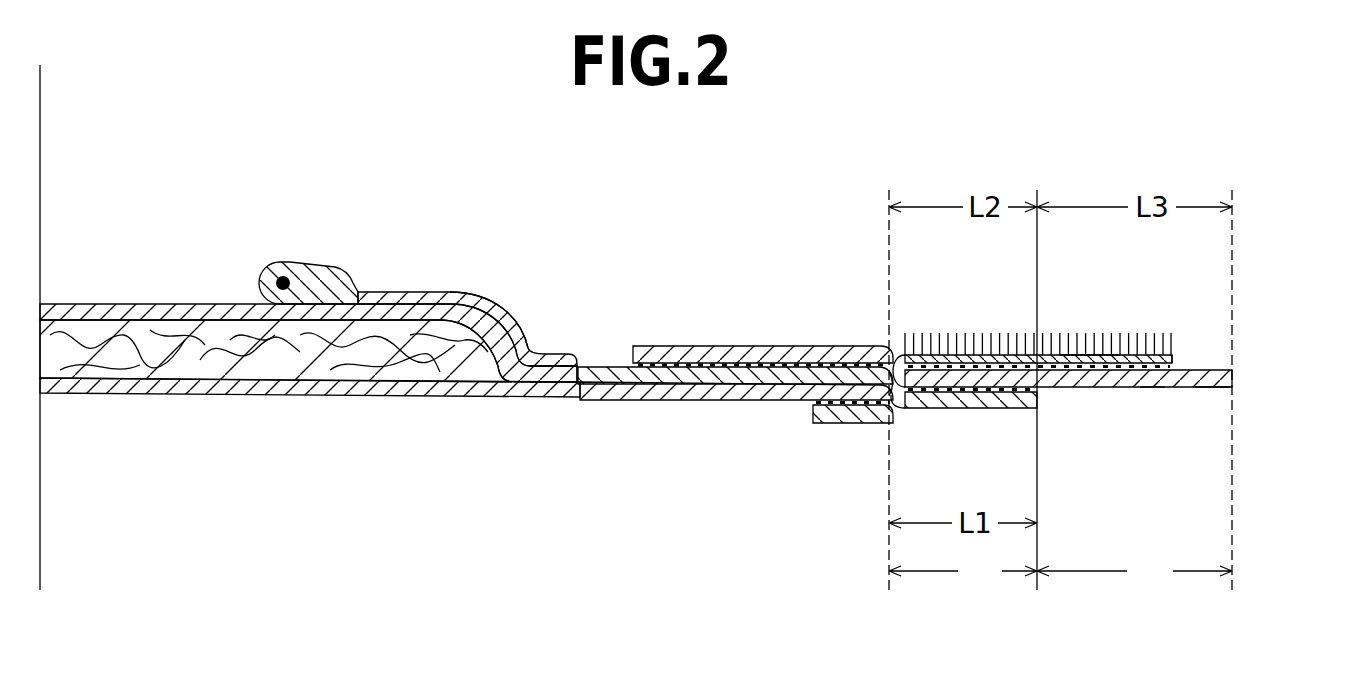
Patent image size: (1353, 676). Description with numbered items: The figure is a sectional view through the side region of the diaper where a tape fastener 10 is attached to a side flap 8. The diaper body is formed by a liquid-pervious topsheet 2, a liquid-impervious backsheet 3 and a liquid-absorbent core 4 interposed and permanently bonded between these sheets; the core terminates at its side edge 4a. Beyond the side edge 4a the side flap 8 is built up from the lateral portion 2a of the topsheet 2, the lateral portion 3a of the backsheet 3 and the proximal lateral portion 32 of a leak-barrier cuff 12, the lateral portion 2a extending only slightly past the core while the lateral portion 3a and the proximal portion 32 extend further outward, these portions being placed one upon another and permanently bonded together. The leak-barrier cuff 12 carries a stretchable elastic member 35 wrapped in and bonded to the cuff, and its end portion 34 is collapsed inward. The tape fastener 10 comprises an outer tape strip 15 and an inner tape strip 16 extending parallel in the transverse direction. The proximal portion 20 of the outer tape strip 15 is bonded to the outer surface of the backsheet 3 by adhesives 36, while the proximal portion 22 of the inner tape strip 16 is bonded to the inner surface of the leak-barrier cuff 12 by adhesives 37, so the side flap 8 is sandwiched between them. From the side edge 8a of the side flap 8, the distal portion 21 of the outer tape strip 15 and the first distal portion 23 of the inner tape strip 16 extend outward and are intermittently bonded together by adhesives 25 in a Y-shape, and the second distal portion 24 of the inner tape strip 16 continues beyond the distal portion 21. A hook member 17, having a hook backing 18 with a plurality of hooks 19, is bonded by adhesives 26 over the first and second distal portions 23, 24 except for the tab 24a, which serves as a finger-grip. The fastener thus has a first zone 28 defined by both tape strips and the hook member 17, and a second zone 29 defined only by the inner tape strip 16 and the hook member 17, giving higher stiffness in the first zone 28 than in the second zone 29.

The liquid-pervious topsheet 2 is at (98, 312).
The lateral portion of the topsheet 2a is at (546, 376).
The liquid-impervious backsheet 3 is at (230, 388).
The lateral portion of the backsheet 3a is at (626, 394).
The liquid-absorbent core 4 is at (158, 348).
The side edge of the core 4a is at (480, 372).
The side flap 8 is at (696, 380).
The side edge of the side flap 8a is at (884, 372).
The tape fastener 10 is at (1220, 397).
The leak-barrier cuff 12 is at (488, 301).
The outer tape strip 15 is at (936, 402).
The inner tape strip 16 is at (1152, 386).
The hook member 17 is at (1173, 357).
The hook backing 18 is at (1019, 366).
The hooks 19 is at (941, 334).
The proximal portion of the outer tape strip 20 is at (826, 416).
The distal portion of the outer tape strip 21 is at (1022, 390).
The proximal portion of the inner tape strip 22 is at (718, 355).
The first distal portion of the inner tape strip 23 is at (977, 362).
The second distal portion of the inner tape strip 24 is at (1122, 390).
The tab 24a is at (1232, 378).
The adhesives 25 is at (1000, 392).
The adhesives 26 is at (1089, 356).
The first zone 28 is at (963, 571).
The second zone 29 is at (1134, 571).
The proximal lateral portion of the leak-barrier cuff 32 is at (606, 378).
The end portion of the leak-barrier cuff 34 is at (396, 296).
The stretchable elastic member 35 is at (290, 276).
The adhesives 36 is at (853, 408).
The adhesives 37 is at (765, 364).